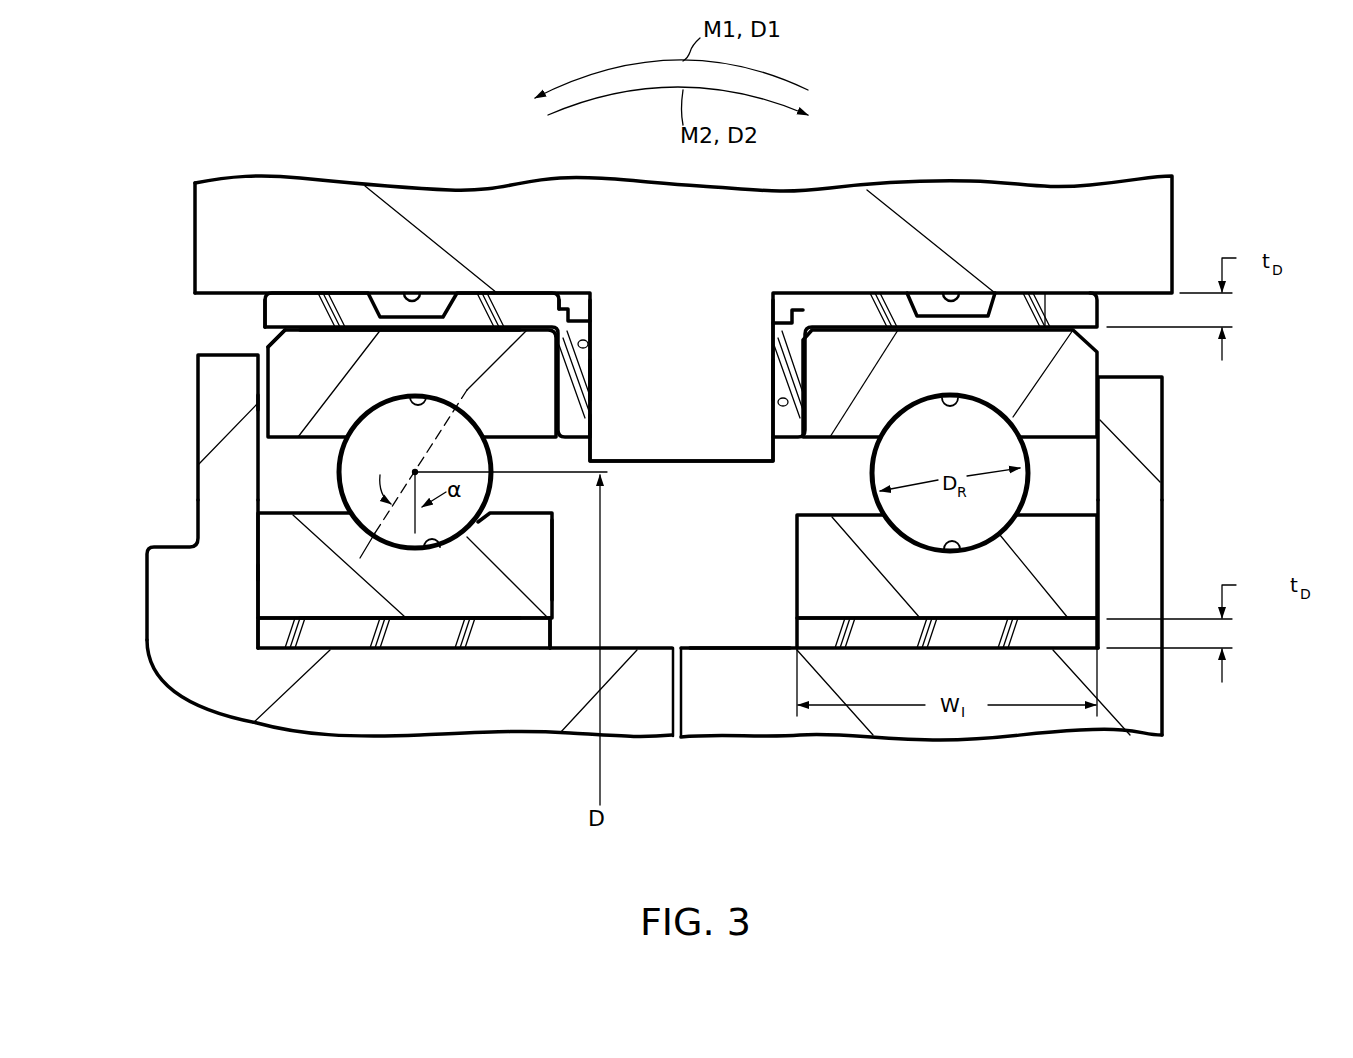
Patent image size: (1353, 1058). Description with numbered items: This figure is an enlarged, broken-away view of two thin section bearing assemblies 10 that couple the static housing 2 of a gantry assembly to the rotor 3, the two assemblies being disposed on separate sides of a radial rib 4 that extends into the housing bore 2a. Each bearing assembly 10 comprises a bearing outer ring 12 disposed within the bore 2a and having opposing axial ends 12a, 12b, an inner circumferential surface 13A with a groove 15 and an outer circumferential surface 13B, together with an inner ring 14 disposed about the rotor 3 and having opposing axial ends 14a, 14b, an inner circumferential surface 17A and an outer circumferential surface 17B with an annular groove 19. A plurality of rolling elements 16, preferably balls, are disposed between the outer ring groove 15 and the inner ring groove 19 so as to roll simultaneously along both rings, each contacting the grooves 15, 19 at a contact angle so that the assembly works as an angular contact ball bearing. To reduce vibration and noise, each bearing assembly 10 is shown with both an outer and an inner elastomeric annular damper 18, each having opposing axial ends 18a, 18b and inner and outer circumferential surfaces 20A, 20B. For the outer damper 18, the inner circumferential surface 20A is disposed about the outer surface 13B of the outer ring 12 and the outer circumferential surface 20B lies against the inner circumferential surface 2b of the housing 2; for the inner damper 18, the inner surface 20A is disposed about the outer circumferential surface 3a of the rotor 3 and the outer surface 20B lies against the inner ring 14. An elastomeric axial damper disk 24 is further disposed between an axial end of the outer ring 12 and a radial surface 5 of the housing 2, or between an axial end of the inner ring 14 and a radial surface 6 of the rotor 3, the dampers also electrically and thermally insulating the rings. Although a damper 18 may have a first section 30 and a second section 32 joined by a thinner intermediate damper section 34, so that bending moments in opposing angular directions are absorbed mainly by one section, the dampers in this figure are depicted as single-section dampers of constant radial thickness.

The static housing 2 is at (427, 189).
The bore 2a is at (657, 630).
The inner circumferential surface 2b is at (410, 296).
The rotor 3 is at (762, 743).
The outer circumferential surface 3a is at (747, 648).
The radial rib 4 is at (698, 465).
The radial surface 5 is at (588, 340).
The radial surface 6 is at (262, 597).
The thin section bearing assembly 10 is at (266, 475).
The bearing outer ring 12 is at (248, 378).
The axial end 12a is at (262, 402).
The axial end 12b is at (593, 424).
The inner circumferential surface 13A is at (293, 437).
The outer circumferential surface 13B is at (474, 330).
The inner ring 14 is at (248, 531).
The axial end 14a is at (258, 573).
The axial end 14b is at (556, 537).
The groove 15 is at (420, 398).
The rolling elements 16 is at (525, 456).
The inner circumferential surface 17A is at (322, 652).
The outer circumferential surface 17B is at (284, 515).
The elastomeric annular damper 18 is at (282, 283).
The axial end 18a is at (262, 312).
The axial end 18b is at (593, 308).
The annular groove 19 is at (443, 548).
The inner circumferential surface 20A is at (322, 331).
The outer circumferential surface 20B is at (322, 294).
The elastomeric axial damper disk 24 is at (597, 379).
The first section 30 is at (853, 307).
The second section 32 is at (1045, 307).
The intermediate damper section 34 is at (946, 318).